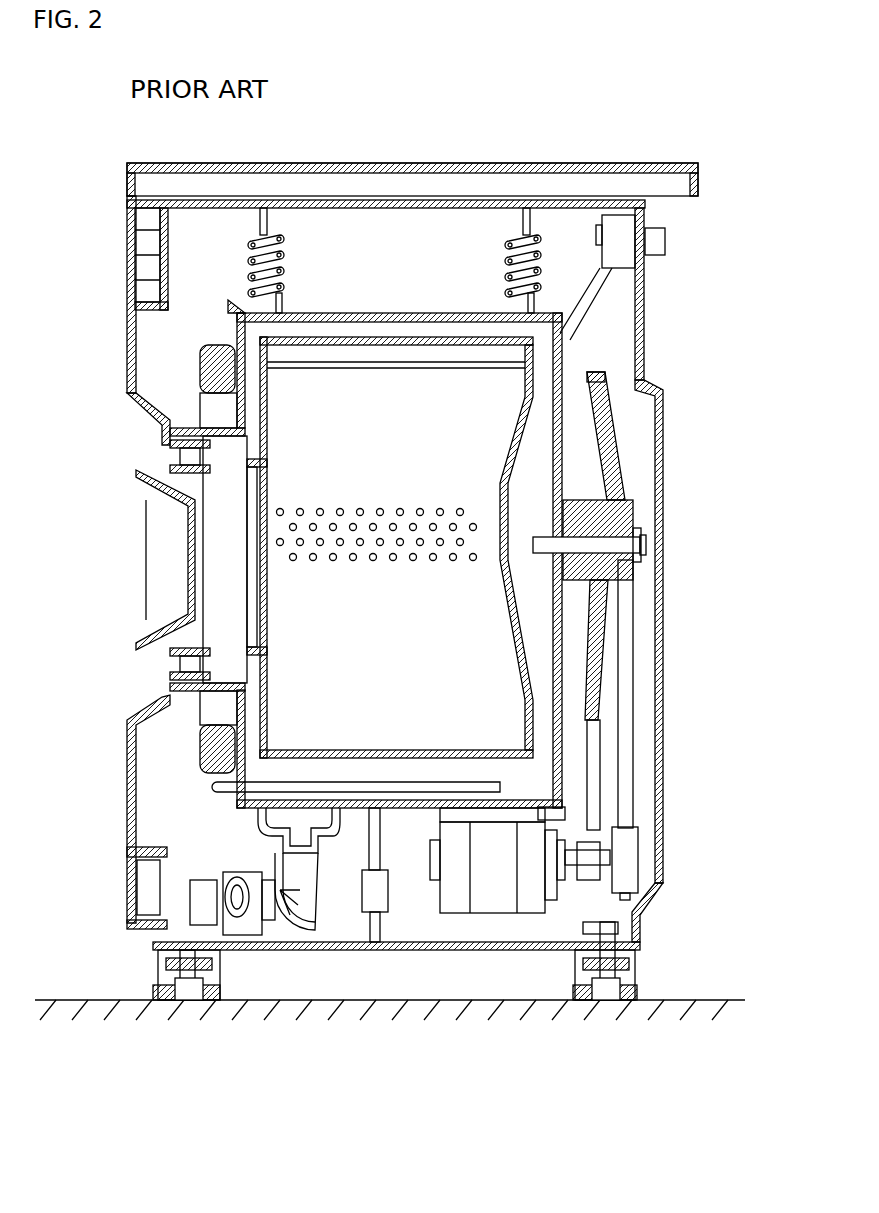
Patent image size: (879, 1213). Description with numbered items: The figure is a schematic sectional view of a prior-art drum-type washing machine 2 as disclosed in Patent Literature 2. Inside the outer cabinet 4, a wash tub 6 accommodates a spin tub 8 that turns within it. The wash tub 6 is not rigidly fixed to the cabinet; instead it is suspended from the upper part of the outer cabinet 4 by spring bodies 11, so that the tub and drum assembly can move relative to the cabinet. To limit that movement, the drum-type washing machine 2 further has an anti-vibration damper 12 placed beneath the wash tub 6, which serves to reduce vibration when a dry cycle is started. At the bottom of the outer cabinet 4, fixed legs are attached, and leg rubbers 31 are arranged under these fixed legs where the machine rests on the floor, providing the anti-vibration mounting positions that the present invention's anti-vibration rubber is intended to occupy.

The drum-type washing machine 2 is at (718, 130).
The outer cabinet 4 is at (127, 347).
The wash tub 6 is at (412, 313).
The spin tub 8 is at (344, 337).
The spring body 11 is at (538, 270).
The anti-vibration damper 12 is at (377, 867).
The leg rubber 31 is at (210, 1000).